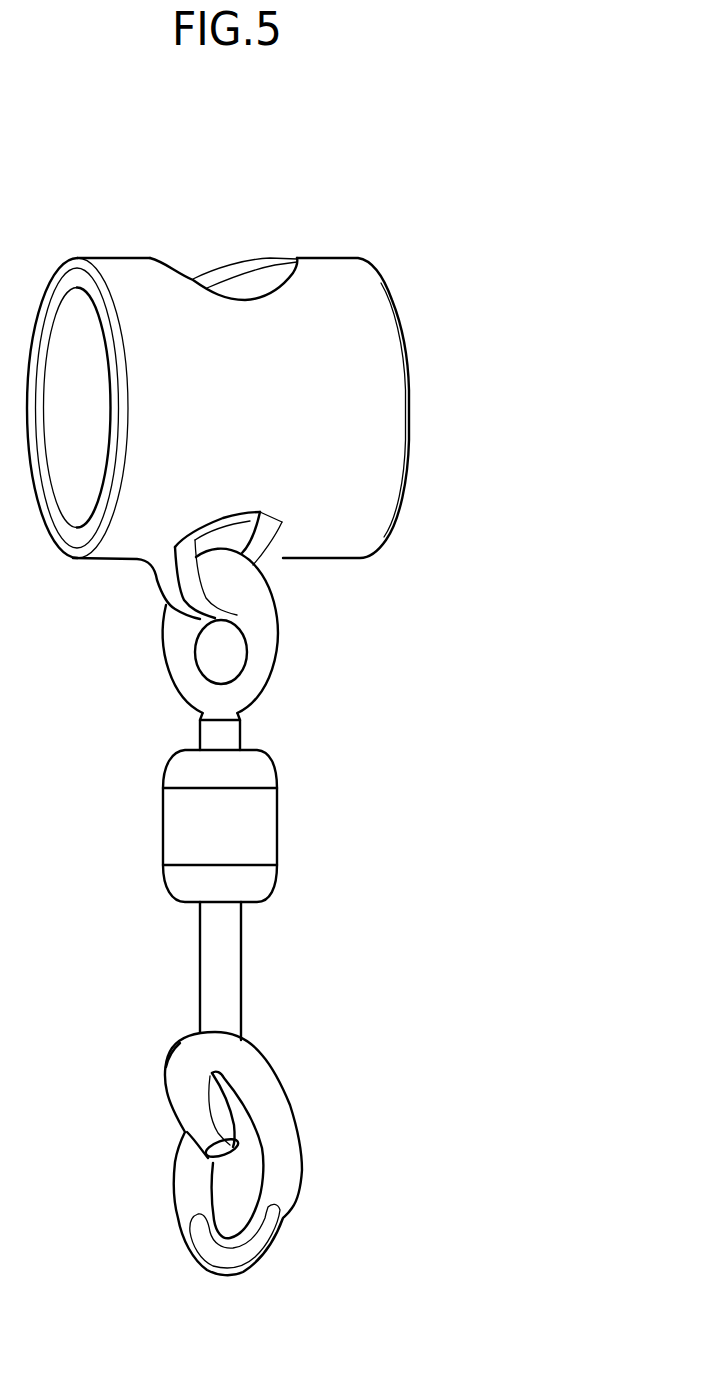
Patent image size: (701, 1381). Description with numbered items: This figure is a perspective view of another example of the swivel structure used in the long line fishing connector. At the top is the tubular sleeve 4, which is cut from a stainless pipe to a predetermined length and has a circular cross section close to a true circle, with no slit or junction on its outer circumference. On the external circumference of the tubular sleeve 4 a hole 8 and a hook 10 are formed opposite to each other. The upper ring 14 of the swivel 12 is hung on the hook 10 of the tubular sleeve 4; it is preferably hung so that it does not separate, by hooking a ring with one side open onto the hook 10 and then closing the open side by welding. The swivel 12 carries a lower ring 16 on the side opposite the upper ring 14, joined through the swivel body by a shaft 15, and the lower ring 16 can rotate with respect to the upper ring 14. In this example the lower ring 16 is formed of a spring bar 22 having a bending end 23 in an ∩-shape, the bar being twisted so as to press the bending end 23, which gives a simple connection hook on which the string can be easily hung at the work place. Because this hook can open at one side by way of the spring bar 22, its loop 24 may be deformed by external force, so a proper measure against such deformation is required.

The tubular sleeve 4 is at (373, 410).
The hole 8 is at (258, 290).
The hook 10 is at (280, 555).
The swivel 12 is at (253, 823).
The upper ring 14 is at (268, 647).
The swivel shaft 15 is at (233, 995).
The lower ring 16 is at (289, 1094).
The spring bar 22 is at (208, 1137).
The bending end 23 is at (180, 1047).
The loop 24 is at (242, 1257).